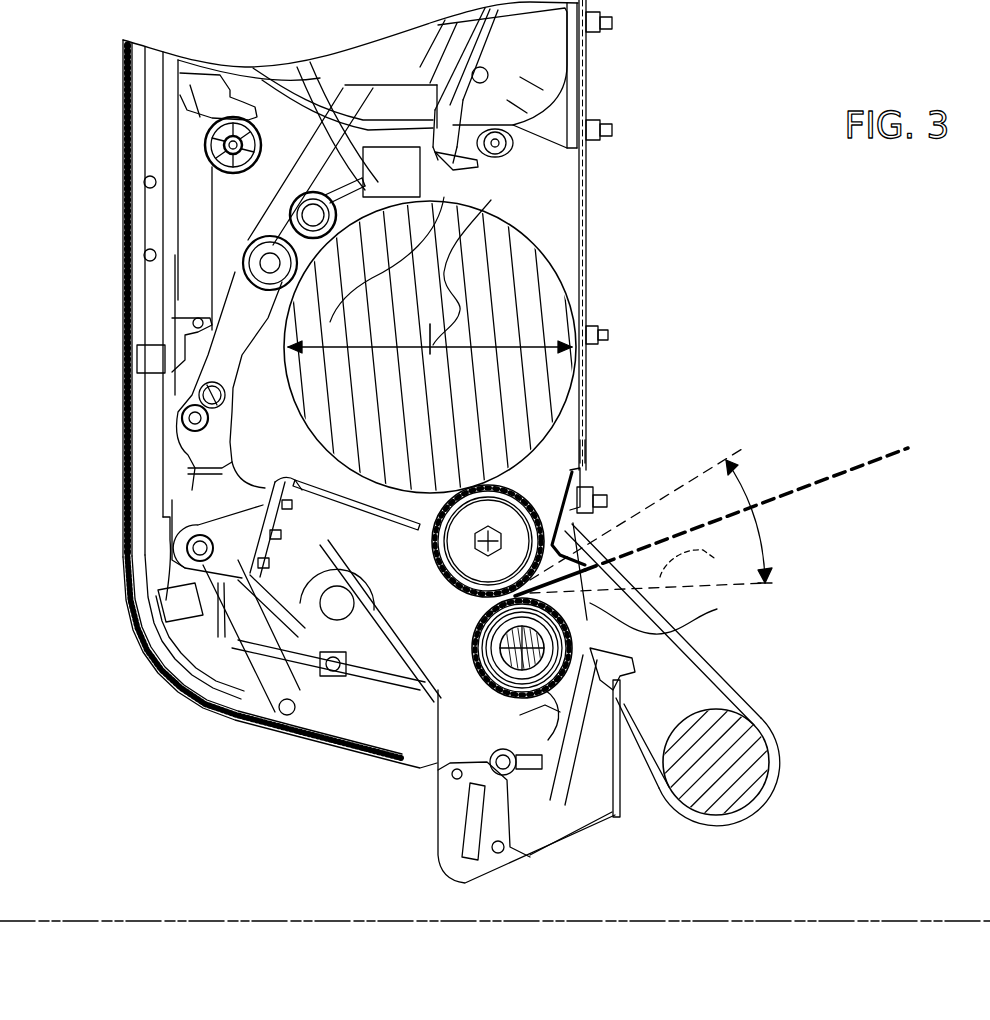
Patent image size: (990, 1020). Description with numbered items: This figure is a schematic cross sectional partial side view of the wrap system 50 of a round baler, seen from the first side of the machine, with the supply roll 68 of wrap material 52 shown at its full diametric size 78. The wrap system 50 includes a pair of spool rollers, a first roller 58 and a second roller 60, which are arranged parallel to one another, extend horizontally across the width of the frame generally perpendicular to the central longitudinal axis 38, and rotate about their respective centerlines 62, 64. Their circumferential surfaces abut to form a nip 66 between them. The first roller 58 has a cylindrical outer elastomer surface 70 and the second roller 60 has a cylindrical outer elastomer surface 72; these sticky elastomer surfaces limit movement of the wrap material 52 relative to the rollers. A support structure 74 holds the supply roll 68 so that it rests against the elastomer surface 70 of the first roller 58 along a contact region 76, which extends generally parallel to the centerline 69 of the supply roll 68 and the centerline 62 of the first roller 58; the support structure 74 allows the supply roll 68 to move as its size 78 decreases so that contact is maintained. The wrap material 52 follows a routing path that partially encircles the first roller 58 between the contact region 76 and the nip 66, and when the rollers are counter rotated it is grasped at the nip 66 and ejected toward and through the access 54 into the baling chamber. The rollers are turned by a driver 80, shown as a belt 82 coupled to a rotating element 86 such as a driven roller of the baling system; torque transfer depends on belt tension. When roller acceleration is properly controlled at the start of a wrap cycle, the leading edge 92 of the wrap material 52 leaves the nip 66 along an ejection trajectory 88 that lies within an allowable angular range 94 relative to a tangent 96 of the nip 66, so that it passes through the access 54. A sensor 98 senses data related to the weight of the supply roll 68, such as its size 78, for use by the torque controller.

The central longitudinal axis 38 is at (950, 921).
The wrap system 50 is at (722, 360).
The wrap material 52 is at (500, 287).
The access 54 is at (822, 522).
The first roller 58 is at (582, 524).
The second roller 60 is at (670, 612).
The centerline of the first roller 62 is at (423, 542).
The centerline of the second roller 64 is at (500, 652).
The nip 66 is at (443, 576).
The supply roll 68 is at (548, 267).
The centerline of the supply roll 69 is at (478, 259).
The cylindrical outer elastomer surface of the first roller 70 is at (578, 520).
The cylindrical outer elastomer surface of the second roller 72 is at (536, 765).
The support structure 74 is at (238, 325).
The contact region 76 is at (472, 487).
The radial or diametric size of the supply roll 78 is at (397, 245).
The driver 80 is at (716, 656).
The belt 82 is at (735, 691).
The rotating element 86 is at (743, 770).
The ejection trajectory 88 is at (648, 568).
The leading edge of the wrap material 92 is at (632, 505).
The allowable angular range 94 is at (770, 545).
The tangent of the nip 96 is at (867, 460).
The sensor 98 is at (376, 185).